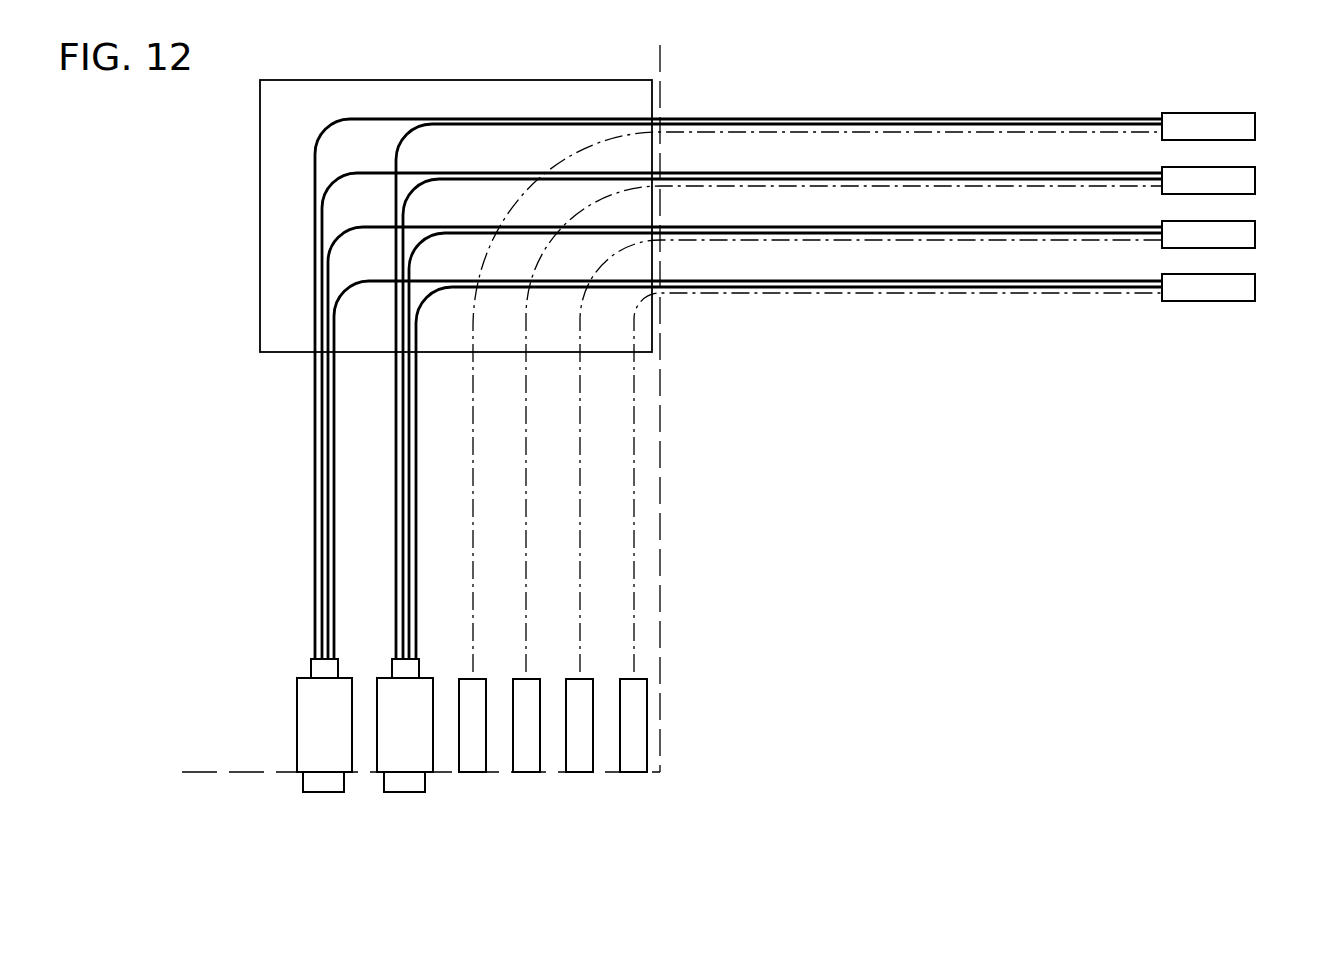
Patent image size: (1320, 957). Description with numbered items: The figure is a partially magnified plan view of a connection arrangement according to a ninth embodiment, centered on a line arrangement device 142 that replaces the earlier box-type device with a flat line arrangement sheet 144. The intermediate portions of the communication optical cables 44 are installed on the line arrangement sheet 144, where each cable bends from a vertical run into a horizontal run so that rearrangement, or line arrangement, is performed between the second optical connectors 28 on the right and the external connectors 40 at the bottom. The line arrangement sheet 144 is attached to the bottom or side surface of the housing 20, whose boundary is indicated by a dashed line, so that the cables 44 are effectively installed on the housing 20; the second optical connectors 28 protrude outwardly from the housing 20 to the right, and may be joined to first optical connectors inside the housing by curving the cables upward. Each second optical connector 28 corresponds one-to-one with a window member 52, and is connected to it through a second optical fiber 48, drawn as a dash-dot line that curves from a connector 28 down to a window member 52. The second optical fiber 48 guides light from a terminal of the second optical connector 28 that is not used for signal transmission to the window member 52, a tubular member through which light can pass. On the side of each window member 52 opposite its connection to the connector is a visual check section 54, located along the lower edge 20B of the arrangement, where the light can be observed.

The line arrangement sheet 144 is at (458, 78).
The line arrangement device 142 is at (873, 64).
The communication optical cable 44 is at (372, 118).
The second optical fiber 48 is at (634, 432).
The second optical connector 28 is at (1210, 112).
The external connector 40 is at (303, 785).
The window member 52 is at (648, 753).
The visual check section 54 is at (472, 774).
The housing 20 is at (664, 655).
The substrate edge 20B is at (215, 775).